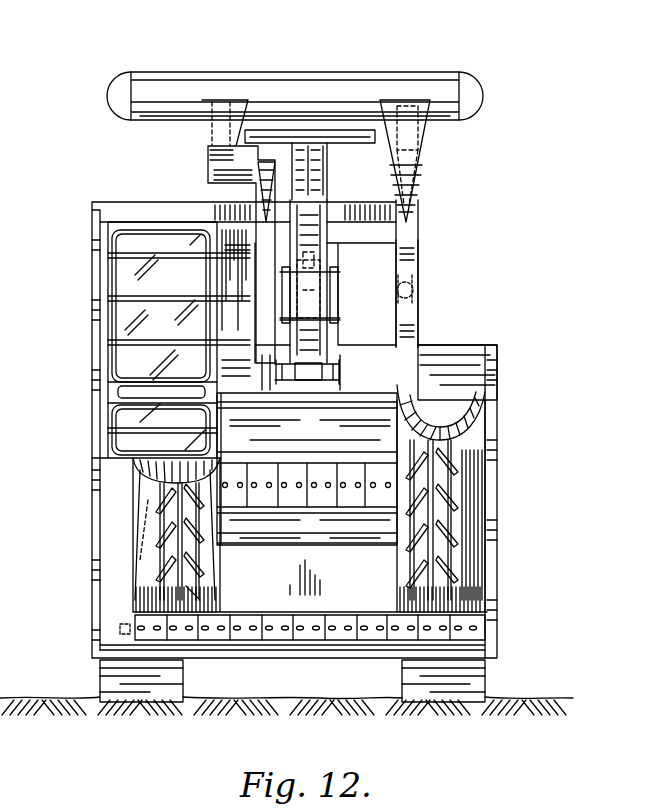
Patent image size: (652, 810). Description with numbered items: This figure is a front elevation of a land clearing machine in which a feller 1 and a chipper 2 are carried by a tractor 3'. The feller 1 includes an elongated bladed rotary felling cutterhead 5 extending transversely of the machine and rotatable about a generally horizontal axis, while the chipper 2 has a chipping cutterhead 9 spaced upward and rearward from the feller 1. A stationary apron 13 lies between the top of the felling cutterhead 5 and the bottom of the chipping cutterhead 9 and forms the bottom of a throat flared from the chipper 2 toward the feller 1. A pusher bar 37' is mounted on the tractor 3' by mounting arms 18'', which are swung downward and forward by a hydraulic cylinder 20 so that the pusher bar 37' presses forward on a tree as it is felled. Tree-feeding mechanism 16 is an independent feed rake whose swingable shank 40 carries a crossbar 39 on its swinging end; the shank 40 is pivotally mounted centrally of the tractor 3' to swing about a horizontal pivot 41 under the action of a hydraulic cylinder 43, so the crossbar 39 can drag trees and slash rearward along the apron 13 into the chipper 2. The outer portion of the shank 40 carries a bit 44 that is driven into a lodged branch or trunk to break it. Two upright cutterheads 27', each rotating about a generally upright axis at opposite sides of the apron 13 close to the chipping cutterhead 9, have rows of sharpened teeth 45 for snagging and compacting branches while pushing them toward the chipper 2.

The feller 1 is at (255, 665).
The chipper 2 is at (300, 531).
The tractor 3' is at (137, 340).
The felling cutterhead 5 is at (350, 640).
The chipping cutterhead 9 is at (350, 475).
The apron 13 is at (352, 594).
The tree-feeding mechanism 16 is at (275, 126).
The mounting arms 18'' is at (314, 231).
The hydraulic cylinder 20 is at (420, 272).
The upright cutterheads 27' is at (293, 520).
The pusher bar 37' is at (295, 74).
The crossbar 39 is at (365, 128).
The shank 40 is at (322, 258).
The pivot 41 is at (338, 365).
The hydraulic cylinder 43 is at (336, 296).
The bit 44 is at (312, 186).
The teeth 45 is at (465, 528).